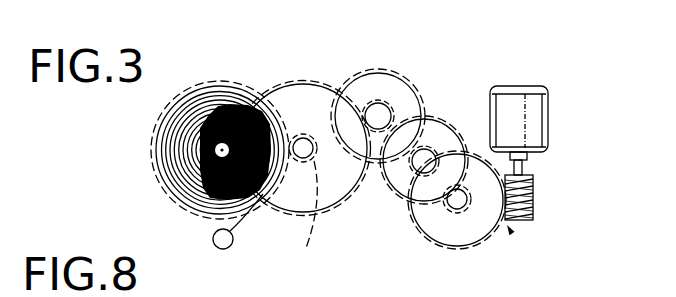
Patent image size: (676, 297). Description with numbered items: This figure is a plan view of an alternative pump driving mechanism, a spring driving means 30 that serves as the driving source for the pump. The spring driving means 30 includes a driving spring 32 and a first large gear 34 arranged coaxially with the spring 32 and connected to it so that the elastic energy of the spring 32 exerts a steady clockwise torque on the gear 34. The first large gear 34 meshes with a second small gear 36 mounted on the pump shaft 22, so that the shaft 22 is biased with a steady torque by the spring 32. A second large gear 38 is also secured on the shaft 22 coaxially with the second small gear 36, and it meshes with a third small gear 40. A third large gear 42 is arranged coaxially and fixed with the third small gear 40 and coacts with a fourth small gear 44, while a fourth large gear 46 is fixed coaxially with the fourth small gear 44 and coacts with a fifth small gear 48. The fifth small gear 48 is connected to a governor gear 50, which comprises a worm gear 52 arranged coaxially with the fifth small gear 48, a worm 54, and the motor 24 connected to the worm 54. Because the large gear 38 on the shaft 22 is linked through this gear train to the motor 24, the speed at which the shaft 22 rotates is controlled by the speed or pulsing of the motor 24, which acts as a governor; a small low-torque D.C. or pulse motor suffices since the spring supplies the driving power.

The shaft 22 is at (300, 147).
The motor 24 is at (535, 118).
The spring driving means 30 is at (228, 74).
The driving spring 32 is at (185, 172).
The first large gear 34 is at (172, 113).
The second small gear 36 is at (304, 216).
The second large gear 38 is at (293, 105).
The third small gear 40 is at (378, 115).
The third large gear 42 is at (362, 95).
The fourth small gear 44 is at (411, 160).
The fourth large gear 46 is at (435, 138).
The fifth small gear 48 is at (453, 200).
The governor gear 50 is at (510, 232).
The worm gear 52 is at (470, 217).
The worm 54 is at (532, 192).